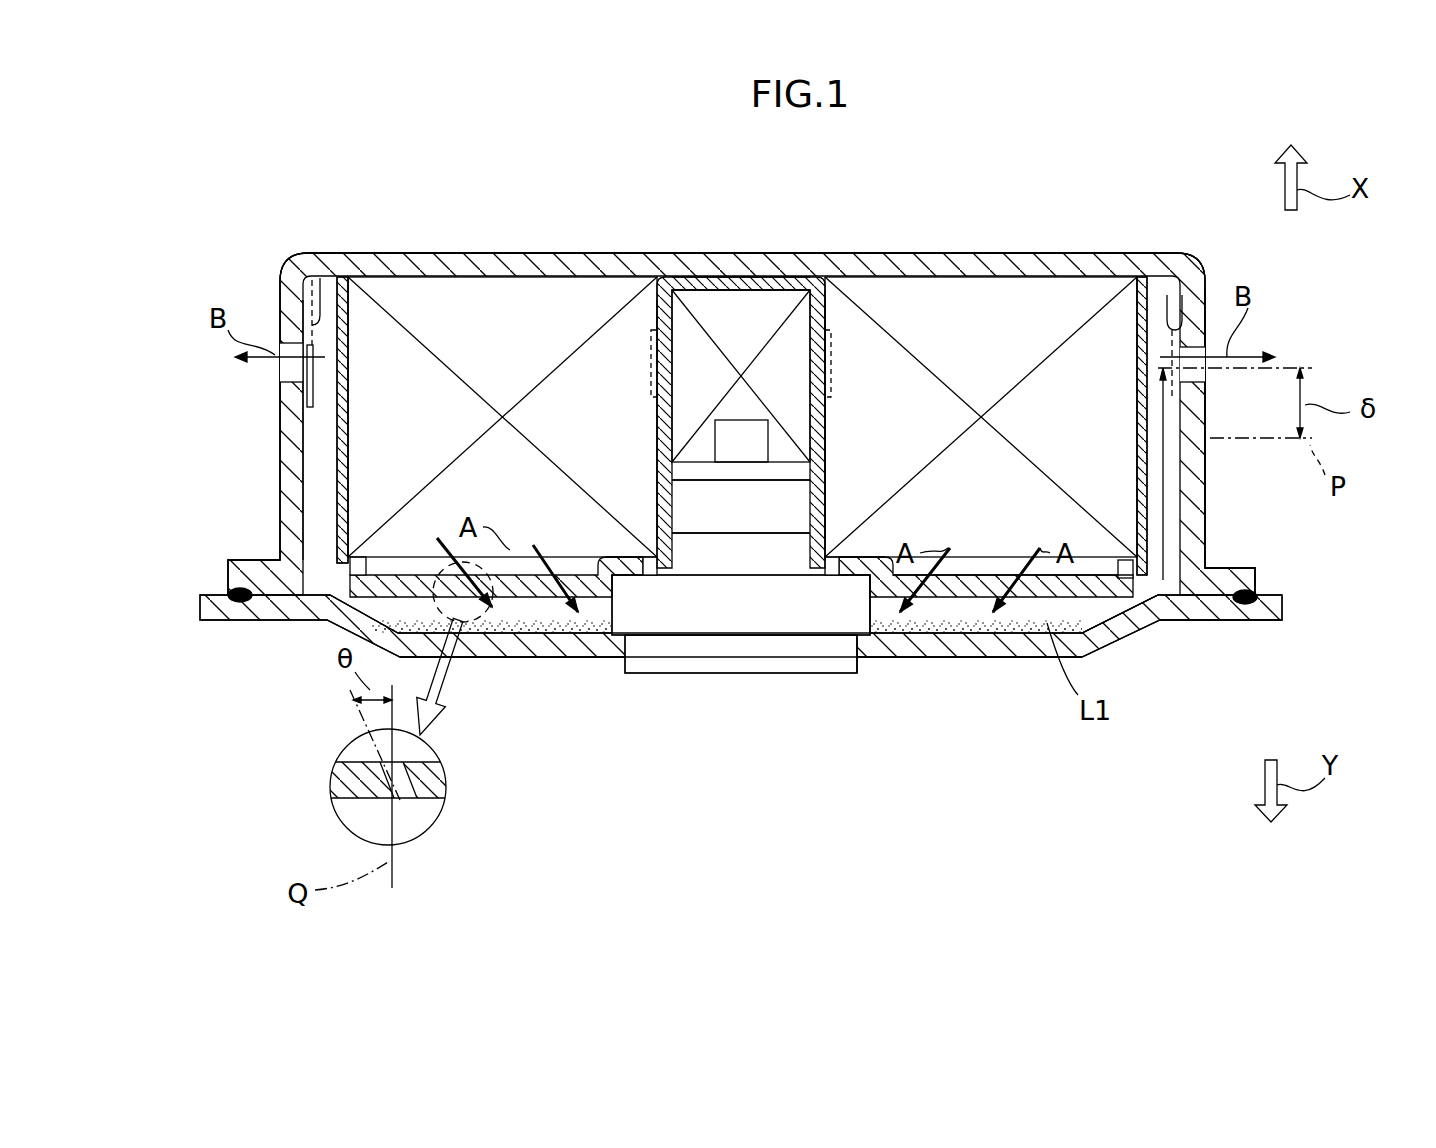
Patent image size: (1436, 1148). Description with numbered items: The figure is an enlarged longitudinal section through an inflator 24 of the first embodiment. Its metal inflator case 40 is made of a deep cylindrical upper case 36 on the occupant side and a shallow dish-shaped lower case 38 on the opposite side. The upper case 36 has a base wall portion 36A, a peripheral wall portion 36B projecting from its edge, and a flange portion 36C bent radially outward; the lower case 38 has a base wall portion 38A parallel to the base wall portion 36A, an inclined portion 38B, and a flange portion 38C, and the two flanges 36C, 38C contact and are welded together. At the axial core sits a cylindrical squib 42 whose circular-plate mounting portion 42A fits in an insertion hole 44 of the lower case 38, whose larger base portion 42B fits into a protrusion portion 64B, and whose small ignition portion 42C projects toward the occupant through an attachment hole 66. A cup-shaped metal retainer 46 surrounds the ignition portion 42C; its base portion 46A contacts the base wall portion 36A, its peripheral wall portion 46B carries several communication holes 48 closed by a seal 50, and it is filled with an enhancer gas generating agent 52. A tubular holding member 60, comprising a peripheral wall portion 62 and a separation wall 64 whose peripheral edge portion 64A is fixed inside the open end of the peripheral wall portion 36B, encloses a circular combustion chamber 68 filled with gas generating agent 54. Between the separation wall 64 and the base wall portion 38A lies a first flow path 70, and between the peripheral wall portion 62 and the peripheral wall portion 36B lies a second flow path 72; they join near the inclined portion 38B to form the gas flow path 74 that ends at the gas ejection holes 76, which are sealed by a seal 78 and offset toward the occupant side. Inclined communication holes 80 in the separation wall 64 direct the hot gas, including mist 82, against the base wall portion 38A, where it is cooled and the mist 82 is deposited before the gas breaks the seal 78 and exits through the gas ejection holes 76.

The inflator 24 is at (1093, 213).
The upper case 36 is at (932, 250).
The base wall portion 36A is at (548, 262).
The peripheral wall portion 36B is at (1197, 500).
The flange portion 36C is at (1233, 574).
The lower case 38 is at (1043, 660).
The base wall portion 38A is at (985, 656).
The inclined portion 38B is at (1128, 633).
The flange portion 38C is at (1247, 621).
The inflator case 40 is at (741, 455).
The squib 42 is at (797, 677).
The mounting portion 42A is at (753, 653).
The base portion 42B is at (705, 623).
The ignition portion 42C is at (793, 507).
The insertion hole 44 is at (852, 648).
The retainer 46 is at (652, 447).
The base portion 46A is at (717, 287).
The peripheral wall portion 46B is at (818, 437).
The communication holes 48 is at (651, 373).
The seal 50 is at (648, 325).
The gas generating agent 52 is at (770, 310).
The gas generating agent 54 is at (1040, 257).
The holding member 60 is at (327, 520).
The peripheral wall portion 62 is at (333, 478).
The separation wall 64 is at (527, 597).
The peripheral edge portion 64A is at (1118, 560).
The protrusion portion 64B is at (865, 553).
The attachment hole 66 is at (820, 577).
The combustion chamber 68 is at (953, 372).
The first flow path 70 is at (950, 563).
The second flow path 72 is at (1153, 457).
The gas flow path 74 is at (742, 426).
The gas ejection holes 76 is at (298, 382).
The seal 78 is at (313, 290).
The communication holes 80 is at (485, 560).
The mist 82 is at (602, 632).